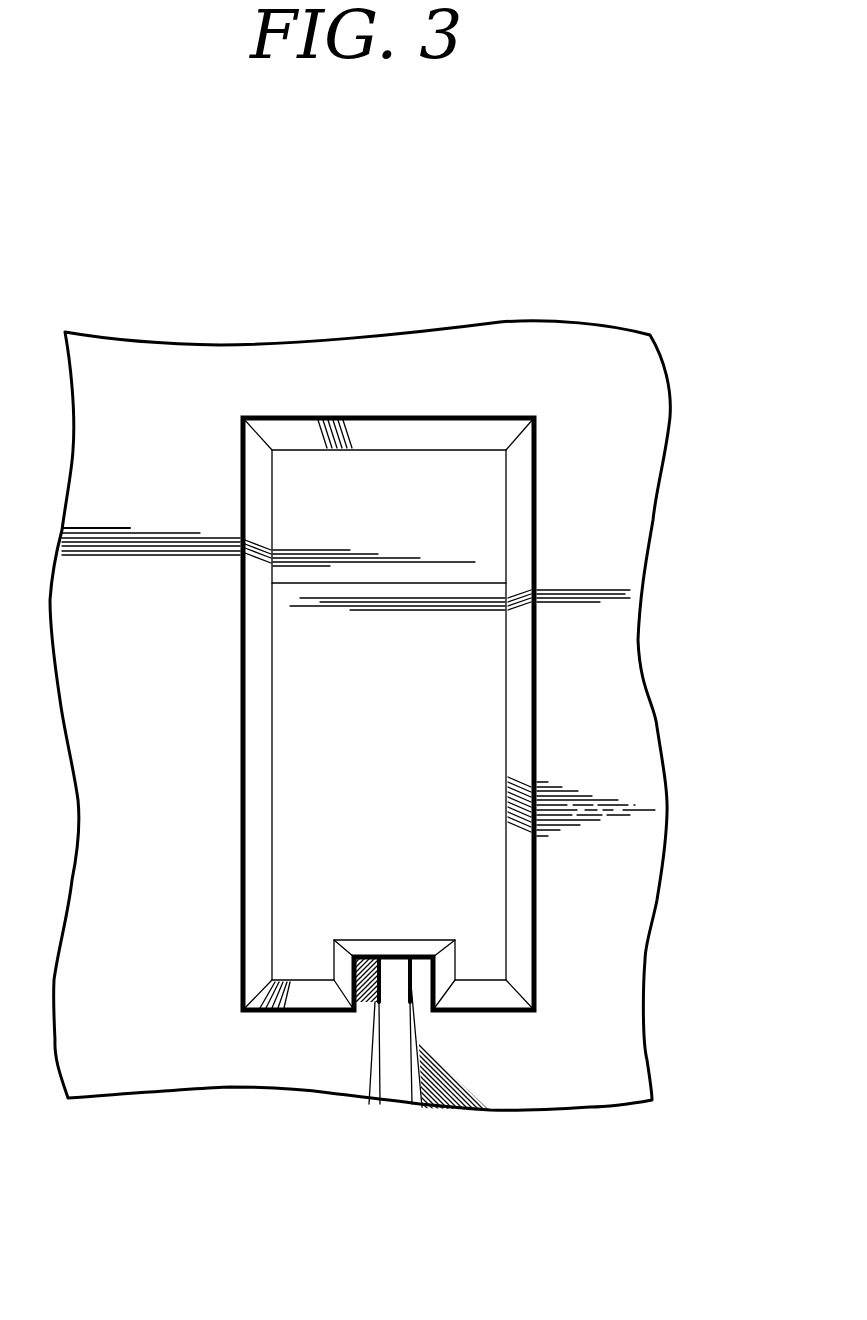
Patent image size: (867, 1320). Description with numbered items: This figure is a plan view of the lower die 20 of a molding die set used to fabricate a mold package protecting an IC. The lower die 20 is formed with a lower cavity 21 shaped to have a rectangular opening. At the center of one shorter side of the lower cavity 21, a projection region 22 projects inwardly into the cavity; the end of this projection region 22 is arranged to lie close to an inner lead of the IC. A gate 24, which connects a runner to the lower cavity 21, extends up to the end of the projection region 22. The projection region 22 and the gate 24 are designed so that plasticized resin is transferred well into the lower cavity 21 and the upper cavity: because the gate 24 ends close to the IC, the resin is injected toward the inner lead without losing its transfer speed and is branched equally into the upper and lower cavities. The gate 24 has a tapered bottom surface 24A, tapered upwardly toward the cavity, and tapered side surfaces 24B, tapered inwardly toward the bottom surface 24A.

The lower die 20 is at (473, 320).
The lower cavity 21 is at (475, 493).
The projection region 22 is at (430, 973).
The gate 24 is at (424, 1035).
The tapered bottom surface 24A is at (393, 1092).
The tapered side surfaces 24B is at (413, 1097).